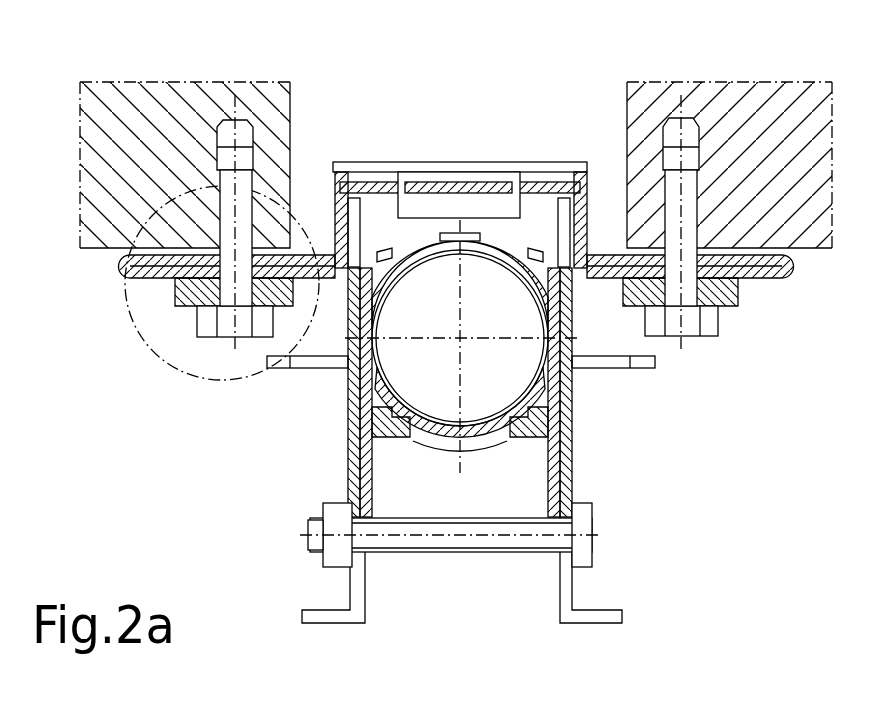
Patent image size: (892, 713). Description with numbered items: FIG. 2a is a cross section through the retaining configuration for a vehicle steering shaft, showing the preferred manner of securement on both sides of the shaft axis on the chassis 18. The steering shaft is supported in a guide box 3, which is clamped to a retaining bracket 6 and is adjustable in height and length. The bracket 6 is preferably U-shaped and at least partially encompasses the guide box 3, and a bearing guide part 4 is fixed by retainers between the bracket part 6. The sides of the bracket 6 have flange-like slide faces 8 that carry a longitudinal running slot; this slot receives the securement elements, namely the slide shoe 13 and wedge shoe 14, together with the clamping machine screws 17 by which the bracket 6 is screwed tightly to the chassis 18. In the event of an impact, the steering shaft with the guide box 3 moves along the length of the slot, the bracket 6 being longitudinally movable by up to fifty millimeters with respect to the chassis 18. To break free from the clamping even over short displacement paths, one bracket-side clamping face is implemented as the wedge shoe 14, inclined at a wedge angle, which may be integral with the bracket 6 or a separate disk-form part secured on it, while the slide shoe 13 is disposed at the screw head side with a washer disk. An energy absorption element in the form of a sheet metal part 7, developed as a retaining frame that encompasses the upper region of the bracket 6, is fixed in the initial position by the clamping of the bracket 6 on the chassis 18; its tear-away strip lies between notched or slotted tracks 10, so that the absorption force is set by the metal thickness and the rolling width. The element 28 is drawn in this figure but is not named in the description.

The guide box 3 is at (410, 253).
The bearing guide part 4 is at (542, 383).
The retaining bracket 6 is at (352, 163).
The sheet metal part 7 is at (368, 163).
The flange-like slide face 8 is at (771, 245).
The notched or slotted track 10 is at (385, 163).
The slide shoe 13 is at (730, 298).
The wedge shoe 14 is at (738, 285).
The clamping machine screw 17 is at (687, 188).
The chassis 18 is at (109, 223).
The cross bolt 28 is at (415, 535).